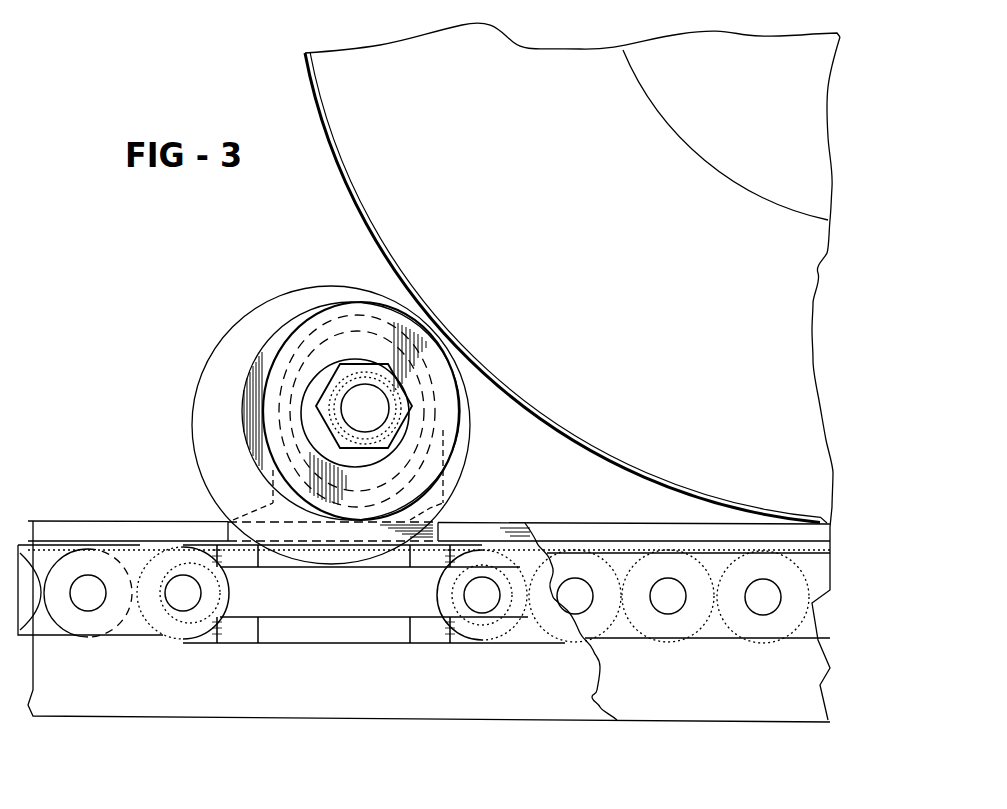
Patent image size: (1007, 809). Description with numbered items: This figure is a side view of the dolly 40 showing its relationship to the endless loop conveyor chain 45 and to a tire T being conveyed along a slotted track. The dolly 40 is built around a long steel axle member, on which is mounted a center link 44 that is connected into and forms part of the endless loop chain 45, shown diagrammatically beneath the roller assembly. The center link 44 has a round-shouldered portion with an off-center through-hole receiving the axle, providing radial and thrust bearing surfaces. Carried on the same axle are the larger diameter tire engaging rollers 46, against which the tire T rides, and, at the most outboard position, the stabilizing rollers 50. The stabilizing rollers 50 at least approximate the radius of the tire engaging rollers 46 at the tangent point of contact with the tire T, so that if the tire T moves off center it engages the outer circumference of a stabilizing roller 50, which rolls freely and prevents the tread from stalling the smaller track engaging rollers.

The tire T is at (355, 200).
The dolly 40 is at (171, 297).
The center link 44 is at (288, 636).
The endless loop chain 45 is at (712, 630).
The tire engaging rollers 46 is at (472, 468).
The stabilizing rollers 50 is at (458, 415).